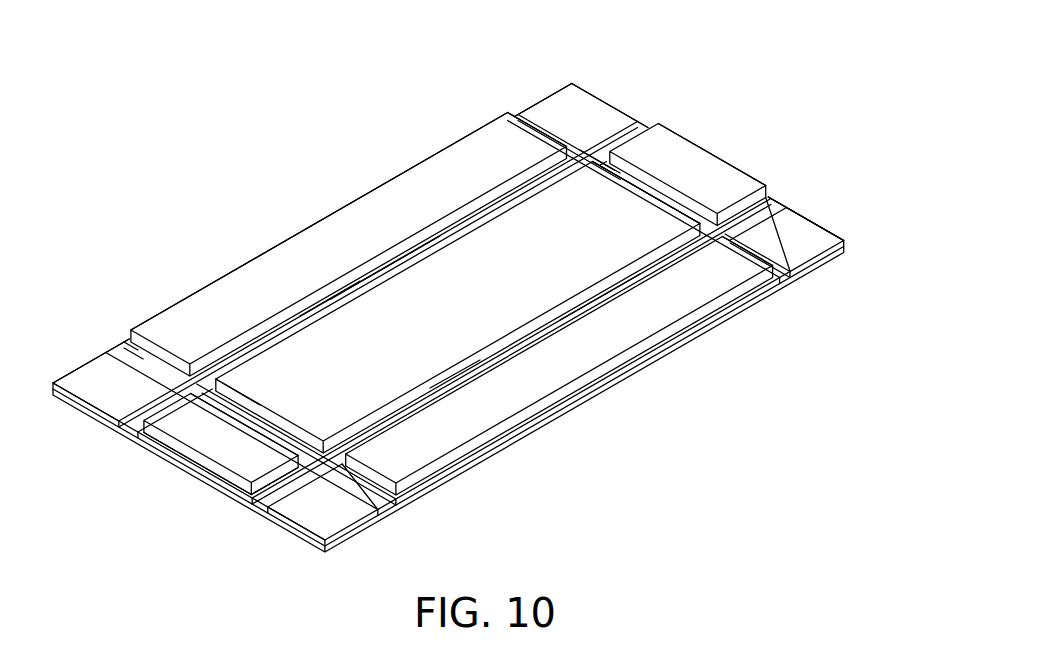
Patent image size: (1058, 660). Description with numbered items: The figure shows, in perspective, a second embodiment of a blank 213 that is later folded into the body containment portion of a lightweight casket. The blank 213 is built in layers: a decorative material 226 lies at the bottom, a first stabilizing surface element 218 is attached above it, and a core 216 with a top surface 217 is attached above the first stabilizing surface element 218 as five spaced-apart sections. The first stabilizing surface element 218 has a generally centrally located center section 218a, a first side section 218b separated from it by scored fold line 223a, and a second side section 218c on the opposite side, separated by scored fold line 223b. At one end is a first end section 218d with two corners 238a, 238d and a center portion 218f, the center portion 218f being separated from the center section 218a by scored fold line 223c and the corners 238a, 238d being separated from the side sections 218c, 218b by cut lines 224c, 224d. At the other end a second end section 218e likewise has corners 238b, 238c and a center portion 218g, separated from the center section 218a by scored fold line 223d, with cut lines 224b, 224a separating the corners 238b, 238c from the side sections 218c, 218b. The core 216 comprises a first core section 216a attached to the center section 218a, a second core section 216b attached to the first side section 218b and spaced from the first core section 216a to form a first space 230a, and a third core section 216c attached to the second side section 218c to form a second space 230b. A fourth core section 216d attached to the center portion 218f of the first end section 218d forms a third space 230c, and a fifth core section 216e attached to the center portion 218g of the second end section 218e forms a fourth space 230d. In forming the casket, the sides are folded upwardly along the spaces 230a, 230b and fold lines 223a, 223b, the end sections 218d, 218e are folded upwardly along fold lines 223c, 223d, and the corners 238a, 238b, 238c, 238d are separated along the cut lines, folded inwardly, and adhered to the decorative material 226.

The blank 213 is at (448, 284).
The core 216 is at (306, 213).
The first core section 216a is at (538, 271).
The second core section 216b is at (463, 170).
The third core section 216c is at (652, 351).
The fourth core section 216d is at (203, 442).
The fifth core section 216e is at (743, 185).
The top surface 217 is at (700, 176).
The first stabilizing surface element 218 is at (358, 490).
The center section 218a is at (512, 340).
The first side section 218b is at (400, 248).
The second side section 218c is at (610, 372).
The first end section 218d is at (183, 487).
The second end section 218e is at (795, 195).
The center portion 218f is at (227, 493).
The center portion 218g is at (787, 197).
The scored fold line 223a is at (325, 340).
The scored fold line 223b is at (452, 388).
The scored fold line 223c is at (230, 395).
The scored fold line 223d is at (597, 165).
The cut line 224a is at (568, 142).
The cut line 224b is at (758, 250).
The cut line 224c is at (343, 470).
The cut line 224d is at (130, 353).
The decorative material 226 is at (428, 489).
The first space 230a is at (520, 176).
The second space 230b is at (640, 270).
The third space 230c is at (274, 428).
The fourth space 230d is at (643, 180).
The corner 238a is at (312, 513).
The corner 238b is at (800, 250).
The corner 238c is at (580, 103).
The corner 238d is at (103, 393).